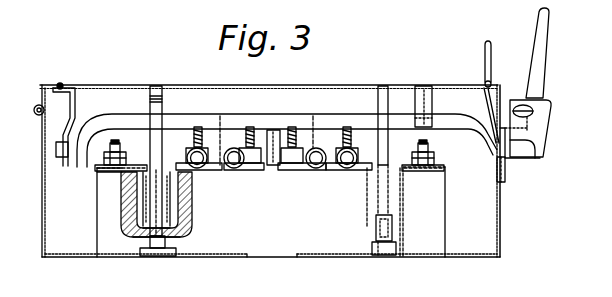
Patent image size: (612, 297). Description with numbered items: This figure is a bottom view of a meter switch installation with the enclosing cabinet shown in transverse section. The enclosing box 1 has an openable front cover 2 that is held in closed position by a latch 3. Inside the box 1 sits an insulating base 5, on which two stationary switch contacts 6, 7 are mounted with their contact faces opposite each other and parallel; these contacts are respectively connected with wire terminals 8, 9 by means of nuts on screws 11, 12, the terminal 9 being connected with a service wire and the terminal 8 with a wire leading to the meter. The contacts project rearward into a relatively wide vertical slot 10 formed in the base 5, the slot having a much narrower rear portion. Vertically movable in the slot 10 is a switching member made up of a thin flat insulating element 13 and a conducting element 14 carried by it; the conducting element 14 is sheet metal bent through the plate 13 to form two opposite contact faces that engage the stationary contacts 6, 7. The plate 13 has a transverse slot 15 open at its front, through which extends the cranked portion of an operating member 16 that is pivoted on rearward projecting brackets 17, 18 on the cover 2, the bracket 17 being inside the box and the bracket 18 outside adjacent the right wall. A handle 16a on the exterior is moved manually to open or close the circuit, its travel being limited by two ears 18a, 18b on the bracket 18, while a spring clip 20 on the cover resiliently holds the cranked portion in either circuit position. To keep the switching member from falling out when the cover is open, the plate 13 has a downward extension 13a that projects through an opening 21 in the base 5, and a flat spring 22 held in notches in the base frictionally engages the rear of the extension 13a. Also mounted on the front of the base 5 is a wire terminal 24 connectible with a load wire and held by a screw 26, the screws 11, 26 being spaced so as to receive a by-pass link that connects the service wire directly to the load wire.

The enclosing box 1 is at (500, 218).
The openable front cover 2 is at (157, 85).
The latch 3 is at (485, 58).
The insulating base 5 is at (445, 210).
The stationary switch contact 6 is at (123, 215).
The stationary switch contact 7 is at (181, 190).
The wire terminal 8 is at (447, 158).
The wire terminal 9 is at (274, 151).
The vertical slot 10 is at (186, 224).
The screw 11 is at (194, 139).
The screw 12 is at (116, 142).
The insulating element 13 is at (163, 100).
The downward extension 13a is at (409, 222).
The conducting element 14 is at (124, 190).
The transverse slot 15 is at (152, 124).
The cranked operating member 16 is at (292, 127).
The handle 16a is at (546, 30).
The bracket 17 is at (66, 164).
The bracket 18 is at (505, 180).
The ear 18a is at (543, 152).
The ear 18b is at (547, 108).
The spring clip 20 is at (432, 103).
The opening 21 is at (376, 225).
The flat spring 22 is at (172, 250).
The wire terminal 24 is at (237, 169).
The screw 26 is at (250, 126).